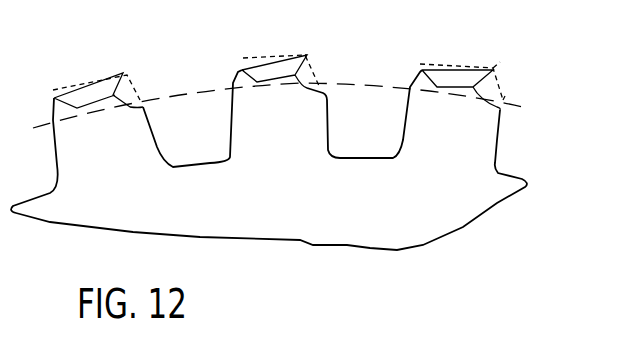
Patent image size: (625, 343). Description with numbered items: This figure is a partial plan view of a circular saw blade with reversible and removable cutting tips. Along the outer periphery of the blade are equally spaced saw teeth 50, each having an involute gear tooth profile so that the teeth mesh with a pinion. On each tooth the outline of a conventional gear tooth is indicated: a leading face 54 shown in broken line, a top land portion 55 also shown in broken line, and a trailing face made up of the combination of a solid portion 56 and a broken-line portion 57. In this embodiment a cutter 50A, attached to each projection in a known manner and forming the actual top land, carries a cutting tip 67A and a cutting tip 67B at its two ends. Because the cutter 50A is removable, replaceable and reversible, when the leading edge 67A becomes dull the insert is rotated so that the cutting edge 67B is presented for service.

The saw tooth 50 is at (118, 152).
The cutter 50A is at (107, 87).
The leading face 54 is at (503, 97).
The top land portion 55 is at (493, 68).
The trailing face portion 56 is at (52, 118).
The trailing face portion 57 is at (53, 90).
The cutting tip 67A is at (307, 55).
The cutting tip 67B is at (242, 69).